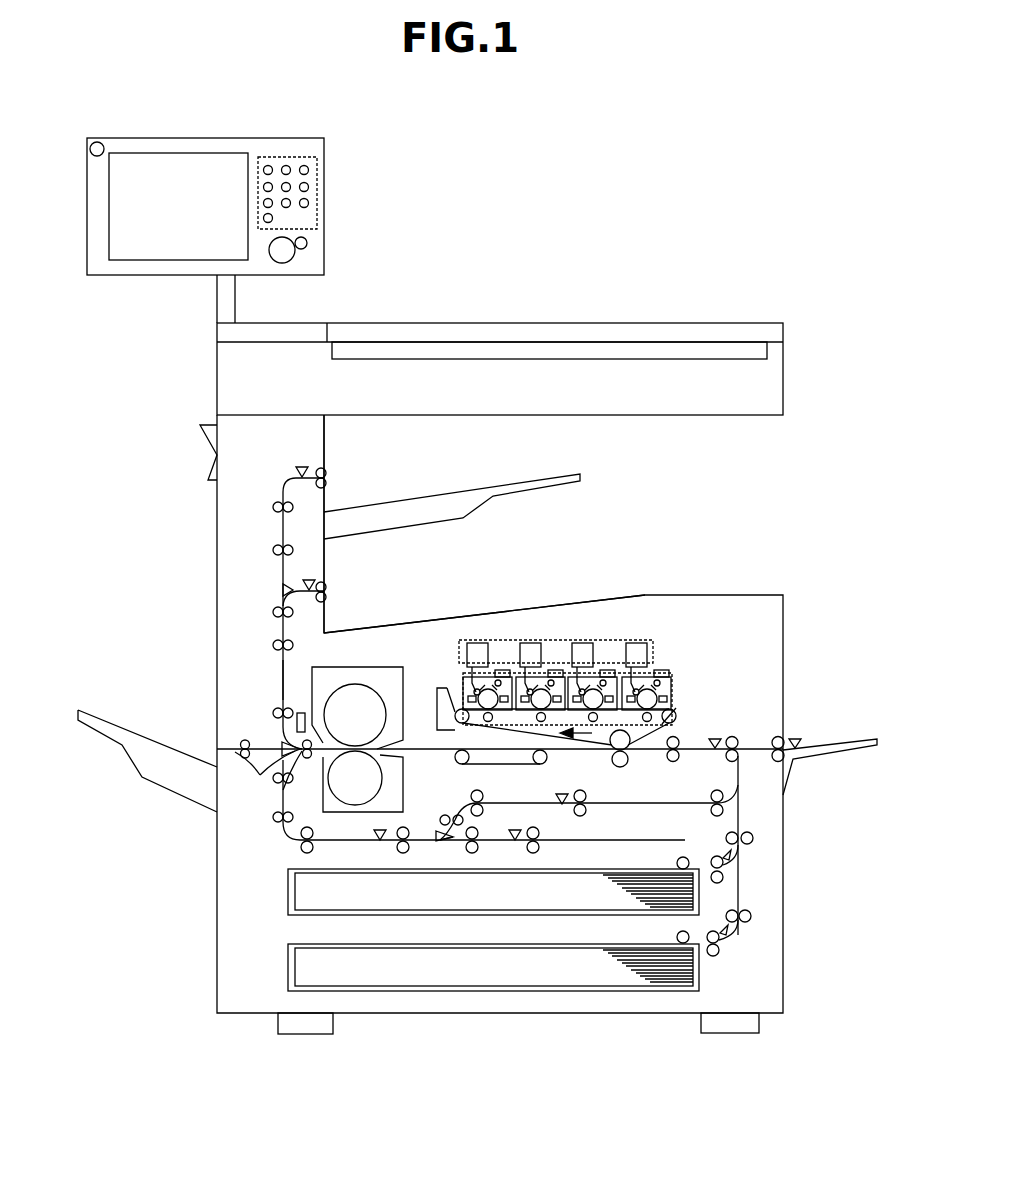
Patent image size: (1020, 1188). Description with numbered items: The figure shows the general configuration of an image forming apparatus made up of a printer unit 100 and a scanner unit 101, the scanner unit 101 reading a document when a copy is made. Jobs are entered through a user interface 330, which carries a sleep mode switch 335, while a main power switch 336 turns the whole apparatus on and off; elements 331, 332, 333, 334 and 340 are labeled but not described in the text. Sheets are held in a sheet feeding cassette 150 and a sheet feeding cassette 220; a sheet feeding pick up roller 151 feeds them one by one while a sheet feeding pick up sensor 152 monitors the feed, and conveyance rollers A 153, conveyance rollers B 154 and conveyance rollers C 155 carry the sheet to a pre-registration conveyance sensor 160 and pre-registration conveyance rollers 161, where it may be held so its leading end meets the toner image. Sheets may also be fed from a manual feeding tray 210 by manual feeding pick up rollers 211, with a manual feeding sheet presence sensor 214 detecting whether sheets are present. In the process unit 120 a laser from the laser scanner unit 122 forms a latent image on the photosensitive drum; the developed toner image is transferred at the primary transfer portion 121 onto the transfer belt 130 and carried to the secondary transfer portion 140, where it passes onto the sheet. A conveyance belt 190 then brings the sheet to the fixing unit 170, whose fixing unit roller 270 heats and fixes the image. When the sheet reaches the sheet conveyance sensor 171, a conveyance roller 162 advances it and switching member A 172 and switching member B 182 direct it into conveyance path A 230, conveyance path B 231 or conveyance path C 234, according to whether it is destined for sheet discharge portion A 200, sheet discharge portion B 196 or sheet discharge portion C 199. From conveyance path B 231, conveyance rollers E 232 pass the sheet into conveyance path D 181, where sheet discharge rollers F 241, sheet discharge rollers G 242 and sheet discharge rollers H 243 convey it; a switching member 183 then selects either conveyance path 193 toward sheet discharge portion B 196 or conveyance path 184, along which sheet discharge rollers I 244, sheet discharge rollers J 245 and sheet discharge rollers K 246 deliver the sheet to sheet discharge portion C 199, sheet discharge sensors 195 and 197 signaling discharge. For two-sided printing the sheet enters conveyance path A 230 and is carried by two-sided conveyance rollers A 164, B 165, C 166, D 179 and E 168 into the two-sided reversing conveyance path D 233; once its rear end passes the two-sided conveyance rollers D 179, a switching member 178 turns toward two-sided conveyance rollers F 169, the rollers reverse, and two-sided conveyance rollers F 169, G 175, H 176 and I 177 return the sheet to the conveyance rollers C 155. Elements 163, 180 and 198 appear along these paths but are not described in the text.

The printer unit 100 is at (712, 595).
The scanner unit 101 is at (506, 323).
The process unit 120 is at (670, 673).
The primary transfer portion 121 is at (676, 718).
The laser scanner unit 122 is at (640, 640).
The transfer belt 130 is at (520, 737).
The secondary transfer portion 140 is at (612, 760).
The sheet feeding cassette 150 is at (463, 980).
The sheet feeding pick up roller 151 is at (672, 938).
The sheet feeding pick up sensor 152 is at (735, 937).
The conveyance rollers A 153 is at (751, 916).
The conveyance rollers B 154 is at (753, 839).
The conveyance rollers C 155 is at (750, 760).
The pre-registration conveyance sensor 160 is at (718, 738).
The pre-registration conveyance rollers 161 is at (680, 760).
The conveyance roller 162 is at (277, 783).
The duplex merge path 163 is at (297, 758).
The two-sided conveyance rollers A 164 is at (285, 823).
The two-sided conveyance rollers B 165 is at (311, 852).
The two-sided conveyance rollers C 166 is at (407, 852).
The two-sided conveyance rollers E 168 is at (539, 850).
The two-sided conveyance rollers F 169 is at (447, 813).
The fixing unit 170 is at (352, 667).
The sheet conveyance sensor 171 is at (317, 765).
The switching member A 172 is at (283, 749).
The two-sided conveyance rollers G 175 is at (483, 795).
The two-sided conveyance rollers H 176 is at (586, 797).
The two-sided conveyance rollers I 177 is at (711, 797).
The switching member 178 is at (437, 822).
The two-sided conveyance rollers D 179 is at (477, 853).
The conveyance path 180 is at (243, 755).
The conveyance path D 181 is at (280, 680).
The switching member B 182 is at (300, 746).
The switching member 183 is at (287, 590).
The conveyance path 184 is at (293, 549).
The conveyance belt 190 is at (505, 765).
The conveyance path 193 is at (326, 605).
The sheet discharge sensor 195 is at (318, 580).
The sheet discharge portion B 196 is at (552, 605).
The sheet discharge sensor 197 is at (301, 467).
The discharge roller 198 is at (327, 481).
The sheet discharge portion C 199 is at (495, 483).
The sheet discharge portion A 200 is at (92, 712).
The manual feeding tray 210 is at (845, 746).
The manual feeding pick up rollers 211 is at (772, 740).
The manual feeding sheet presence sensor 214 is at (797, 738).
The sheet feeding cassette 220 is at (463, 905).
The conveyance path A 230 is at (276, 823).
The conveyance path B 231 is at (284, 647).
The conveyance rollers E 232 is at (290, 710).
The two-sided reversing conveyance path D 233 is at (610, 838).
The conveyance path C 234 is at (225, 745).
The sheet discharge rollers F 241 is at (274, 643).
The sheet discharge rollers G 242 is at (274, 612).
The sheet discharge rollers H 243 is at (326, 591).
The sheet discharge rollers I 244 is at (274, 547).
The sheet discharge rollers J 245 is at (278, 505).
The sheet discharge rollers K 246 is at (325, 470).
The fixing unit roller 270 is at (380, 700).
The user interface 330 is at (197, 138).
The numeric keypad 331 is at (292, 157).
The start key 332 is at (293, 262).
The stop key 333 is at (307, 243).
The display 334 is at (109, 202).
The sleep mode SW 335 is at (92, 142).
The main power SW 336 is at (203, 436).
The sensor 340 is at (300, 713).